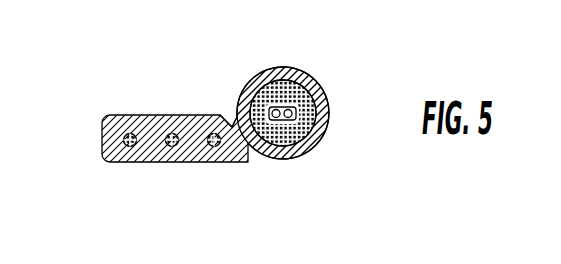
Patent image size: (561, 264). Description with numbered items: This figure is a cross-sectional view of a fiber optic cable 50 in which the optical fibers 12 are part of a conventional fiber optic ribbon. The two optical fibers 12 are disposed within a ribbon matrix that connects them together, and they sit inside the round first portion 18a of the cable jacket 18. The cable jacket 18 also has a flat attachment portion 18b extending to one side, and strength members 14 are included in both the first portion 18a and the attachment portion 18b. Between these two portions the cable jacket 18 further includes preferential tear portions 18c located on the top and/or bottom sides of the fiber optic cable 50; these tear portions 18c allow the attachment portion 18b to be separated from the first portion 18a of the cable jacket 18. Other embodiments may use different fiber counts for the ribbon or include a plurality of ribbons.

The fiber optic cable 50 is at (147, 66).
The cable jacket 18 is at (110, 118).
The first portion 18a is at (330, 187).
The attachment portion 18b is at (240, 168).
The preferential tear portions 18c is at (229, 115).
The strength members 14 is at (220, 133).
The optical fibers 12 is at (297, 111).